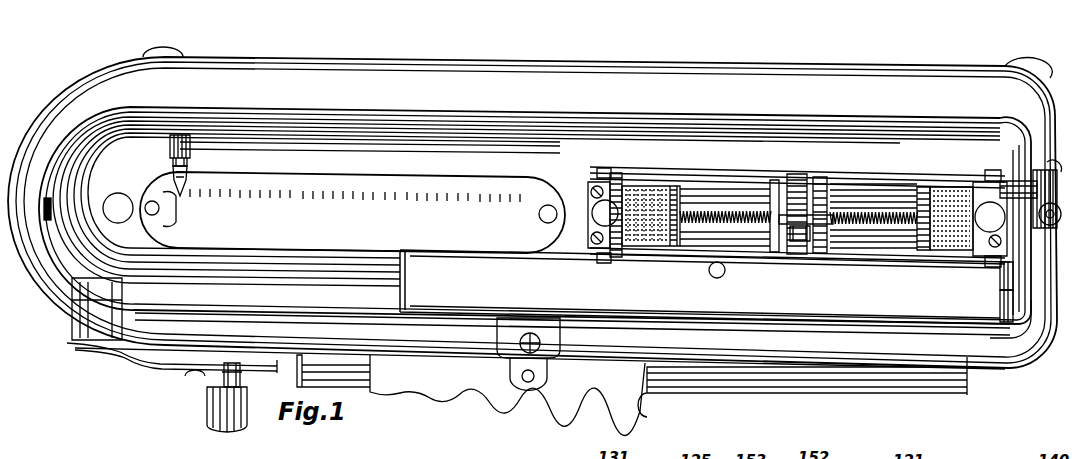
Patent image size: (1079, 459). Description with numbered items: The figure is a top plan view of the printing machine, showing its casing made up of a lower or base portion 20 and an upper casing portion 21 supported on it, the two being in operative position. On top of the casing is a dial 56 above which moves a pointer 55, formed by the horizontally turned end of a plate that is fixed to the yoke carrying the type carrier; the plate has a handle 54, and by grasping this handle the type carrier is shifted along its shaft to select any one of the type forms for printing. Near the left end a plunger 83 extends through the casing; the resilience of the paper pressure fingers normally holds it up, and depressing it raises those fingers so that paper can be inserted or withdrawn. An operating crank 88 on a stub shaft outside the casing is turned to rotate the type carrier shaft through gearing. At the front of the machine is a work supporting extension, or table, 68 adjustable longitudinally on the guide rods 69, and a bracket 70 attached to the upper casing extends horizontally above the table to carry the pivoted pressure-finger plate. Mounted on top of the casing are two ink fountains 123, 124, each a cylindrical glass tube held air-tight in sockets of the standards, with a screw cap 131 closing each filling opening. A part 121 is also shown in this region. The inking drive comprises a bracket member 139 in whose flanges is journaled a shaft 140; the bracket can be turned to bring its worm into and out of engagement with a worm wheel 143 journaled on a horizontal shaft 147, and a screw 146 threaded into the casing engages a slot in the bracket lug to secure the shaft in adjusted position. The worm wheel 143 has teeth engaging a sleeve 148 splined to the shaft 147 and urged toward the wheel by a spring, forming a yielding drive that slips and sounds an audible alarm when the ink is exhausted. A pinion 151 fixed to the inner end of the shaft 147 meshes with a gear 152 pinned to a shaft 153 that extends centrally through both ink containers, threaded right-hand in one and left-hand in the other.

The lower casing portion 20 is at (532, 211).
The upper casing portion 21 is at (282, 274).
The handle 54 is at (191, 147).
The pointer 55 is at (186, 188).
The dial 56 is at (328, 192).
The work supporting extension 68 is at (471, 395).
The guide rods 69 is at (756, 385).
The bracket 70 is at (536, 377).
The plunger 83 is at (121, 195).
The operating crank 88 is at (222, 418).
The frame plate 121 is at (705, 245).
The ink fountain 123 is at (690, 187).
The ink fountain 124 is at (860, 206).
The screw cap 131 is at (596, 218).
The bracket member 139 is at (1000, 293).
The shaft 140 is at (1000, 270).
The worm wheel 143 is at (1048, 168).
The screw 146 is at (1036, 325).
The horizontal shaft 147 is at (838, 184).
The sleeve 148 is at (1008, 180).
The pinion 151 is at (800, 176).
The gear 152 is at (798, 243).
The shaft 153 is at (736, 208).